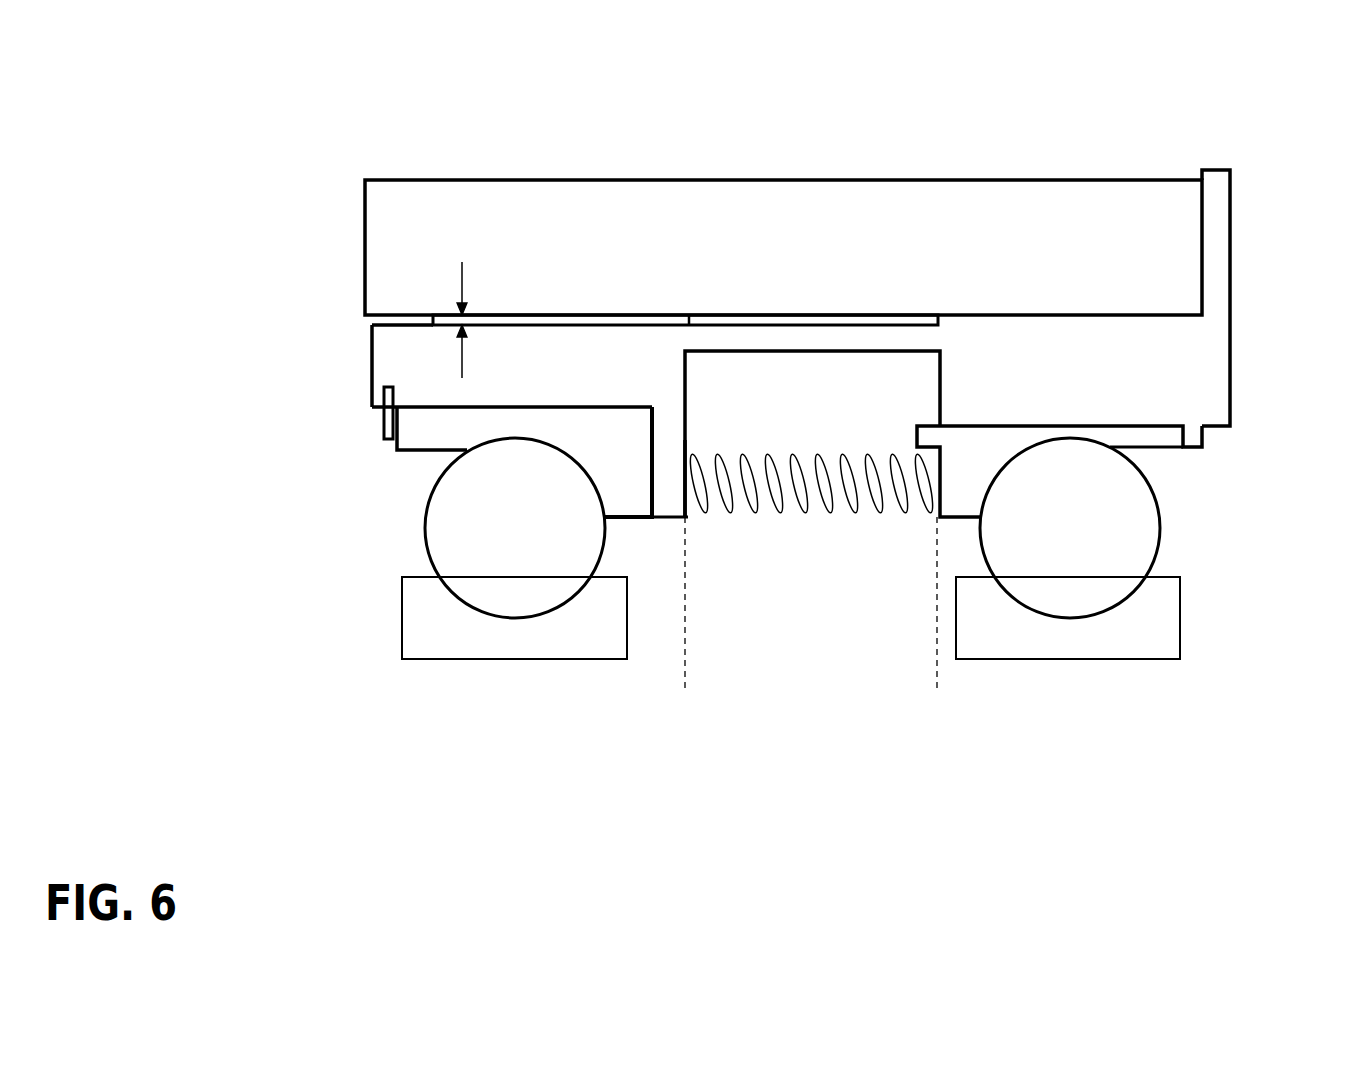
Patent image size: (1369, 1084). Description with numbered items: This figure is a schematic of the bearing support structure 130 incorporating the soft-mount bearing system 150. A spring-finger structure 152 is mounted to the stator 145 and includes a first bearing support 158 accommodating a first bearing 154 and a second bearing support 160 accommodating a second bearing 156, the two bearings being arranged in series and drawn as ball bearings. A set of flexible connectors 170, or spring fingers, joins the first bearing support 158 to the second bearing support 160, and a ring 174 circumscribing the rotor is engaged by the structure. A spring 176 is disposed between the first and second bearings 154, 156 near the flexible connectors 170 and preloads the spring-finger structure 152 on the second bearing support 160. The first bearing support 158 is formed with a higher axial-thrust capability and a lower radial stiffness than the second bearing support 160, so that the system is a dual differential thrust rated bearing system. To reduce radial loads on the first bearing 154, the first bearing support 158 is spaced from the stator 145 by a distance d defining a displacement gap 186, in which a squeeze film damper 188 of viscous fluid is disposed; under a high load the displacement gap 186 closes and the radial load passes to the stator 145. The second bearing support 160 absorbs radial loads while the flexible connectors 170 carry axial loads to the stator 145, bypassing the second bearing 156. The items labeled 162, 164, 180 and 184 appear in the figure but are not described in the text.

The bearing support structure 130 is at (205, 142).
The stator 145 is at (805, 264).
The soft-mount bearing system 150 is at (1192, 359).
The spring-finger structure 152 is at (650, 362).
The first bearing 154 is at (430, 672).
The second bearing 156 is at (1158, 672).
The first bearing support 158 is at (500, 407).
The second bearing support 160 is at (1140, 426).
The stop 162 is at (383, 422).
The end wall 164 is at (1232, 387).
The set of flexible connectors 170 is at (870, 345).
The ring 174 is at (372, 366).
The spring 176 is at (858, 508).
The spring gap 180 is at (925, 679).
The spring seat 184 is at (688, 443).
The displacement gap 186 is at (355, 326).
The squeeze film damper 188 is at (530, 325).